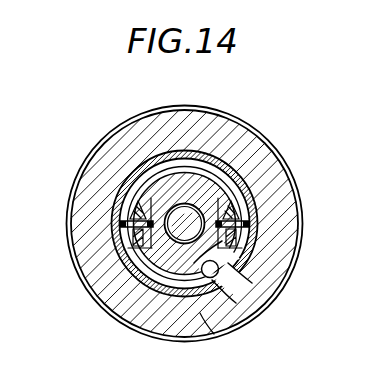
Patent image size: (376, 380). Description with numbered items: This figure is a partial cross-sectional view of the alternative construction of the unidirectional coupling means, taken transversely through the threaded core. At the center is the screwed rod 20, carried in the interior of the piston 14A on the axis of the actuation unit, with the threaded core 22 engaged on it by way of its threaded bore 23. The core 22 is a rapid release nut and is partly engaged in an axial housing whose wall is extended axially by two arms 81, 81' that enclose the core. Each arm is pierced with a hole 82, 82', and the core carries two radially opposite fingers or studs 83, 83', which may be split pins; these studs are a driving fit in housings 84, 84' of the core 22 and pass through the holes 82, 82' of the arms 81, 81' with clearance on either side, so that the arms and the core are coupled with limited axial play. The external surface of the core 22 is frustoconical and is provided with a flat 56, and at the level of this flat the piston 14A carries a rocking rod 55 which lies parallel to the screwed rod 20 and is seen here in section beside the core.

The piston 14A is at (142, 322).
The screwed rod 20 is at (124, 298).
The threaded core 22 is at (197, 182).
The threaded bore 23 is at (172, 186).
The rocking rod 55 is at (238, 300).
The flat 56 is at (200, 315).
The arm 81 is at (96, 273).
The hole 82 is at (91, 194).
The finger or stud 83 is at (86, 248).
The housing 84 is at (105, 180).
The arm 81' is at (280, 272).
The hole 82' is at (282, 193).
The finger or stud 83' is at (286, 246).
The housing 84' is at (272, 182).